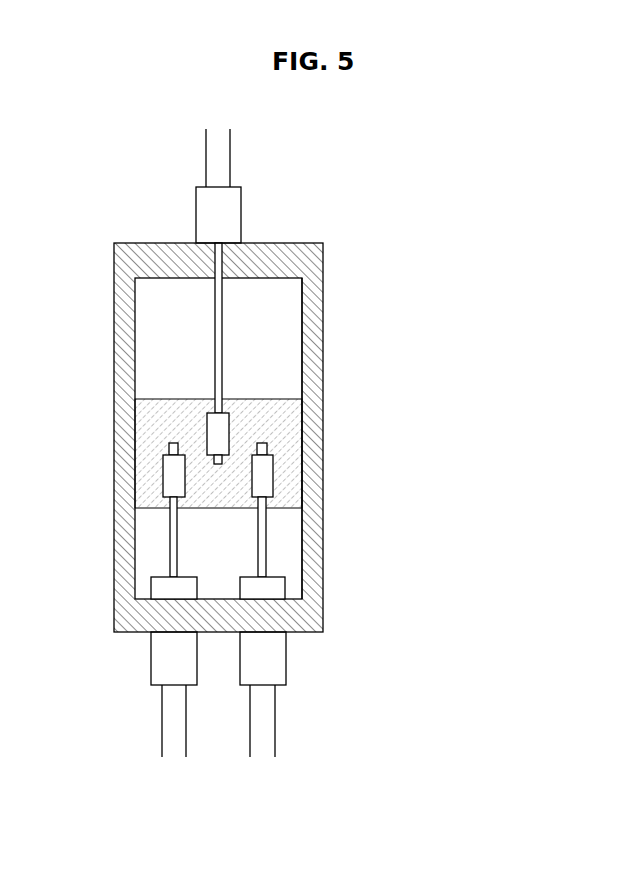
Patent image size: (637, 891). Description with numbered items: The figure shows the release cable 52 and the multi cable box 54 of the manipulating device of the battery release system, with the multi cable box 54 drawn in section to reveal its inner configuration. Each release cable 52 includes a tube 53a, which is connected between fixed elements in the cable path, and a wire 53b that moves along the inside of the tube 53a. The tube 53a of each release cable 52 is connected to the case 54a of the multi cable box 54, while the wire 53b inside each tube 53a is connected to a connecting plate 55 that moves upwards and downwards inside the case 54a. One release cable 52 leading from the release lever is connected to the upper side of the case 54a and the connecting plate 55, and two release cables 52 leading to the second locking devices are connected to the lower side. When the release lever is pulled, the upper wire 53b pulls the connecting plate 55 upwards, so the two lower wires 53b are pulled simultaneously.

The release cable 52 is at (234, 145).
The tube 53a is at (231, 167).
The wire 53b is at (218, 340).
The multi cable box 54 is at (322, 522).
The case 54a is at (320, 482).
The connecting plate 55 is at (288, 428).